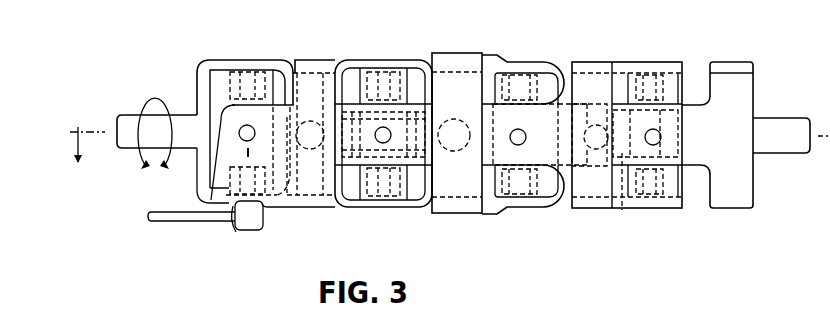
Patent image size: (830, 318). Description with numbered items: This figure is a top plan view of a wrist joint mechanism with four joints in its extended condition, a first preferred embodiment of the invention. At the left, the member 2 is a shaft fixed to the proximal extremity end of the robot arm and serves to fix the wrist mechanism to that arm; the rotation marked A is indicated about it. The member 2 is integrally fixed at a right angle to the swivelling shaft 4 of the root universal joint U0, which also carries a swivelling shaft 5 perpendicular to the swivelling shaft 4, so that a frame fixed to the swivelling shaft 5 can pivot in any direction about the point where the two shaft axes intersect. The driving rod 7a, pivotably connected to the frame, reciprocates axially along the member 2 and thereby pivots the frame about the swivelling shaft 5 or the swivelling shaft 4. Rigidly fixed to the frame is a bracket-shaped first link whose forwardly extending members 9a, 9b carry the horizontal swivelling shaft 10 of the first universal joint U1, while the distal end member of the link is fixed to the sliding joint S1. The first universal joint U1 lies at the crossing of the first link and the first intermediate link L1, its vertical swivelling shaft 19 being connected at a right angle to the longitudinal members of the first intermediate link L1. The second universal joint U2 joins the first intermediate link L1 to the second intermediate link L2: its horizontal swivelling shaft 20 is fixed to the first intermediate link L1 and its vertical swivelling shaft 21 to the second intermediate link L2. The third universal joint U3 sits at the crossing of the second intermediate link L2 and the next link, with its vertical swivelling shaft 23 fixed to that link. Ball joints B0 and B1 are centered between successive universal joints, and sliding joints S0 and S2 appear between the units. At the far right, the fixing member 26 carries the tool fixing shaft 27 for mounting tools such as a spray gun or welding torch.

The member 2 is at (128, 140).
The swivelling shaft 4 is at (241, 179).
The swivelling shaft 5 is at (247, 124).
The driving rod 7a is at (176, 231).
The member of first link 9a is at (305, 98).
The member of first link 9b is at (307, 212).
The horizontal swivelling shaft 10 is at (383, 200).
The vertical swivelling shaft 19 is at (383, 127).
The horizontal swivelling shaft 20 is at (521, 208).
The vertical swivelling shaft 21 is at (527, 127).
The vertical swivelling shaft 23 is at (660, 128).
The fixing member 26 is at (757, 80).
The tool fixing shaft 27 is at (797, 122).
The direction of rotation A is at (121, 146).
The ball joint B0 is at (317, 208).
The ball joint B1 is at (463, 152).
The first intermediate link L1 is at (499, 220).
The second intermediate link L2 is at (605, 221).
The slider S0 is at (352, 208).
The sliding joint S1 is at (425, 60).
The slider S2 is at (624, 210).
The universal joint U0 is at (282, 214).
The first universal joint U1 is at (407, 220).
The second universal joint U2 is at (560, 220).
The third universal joint U3 is at (691, 220).